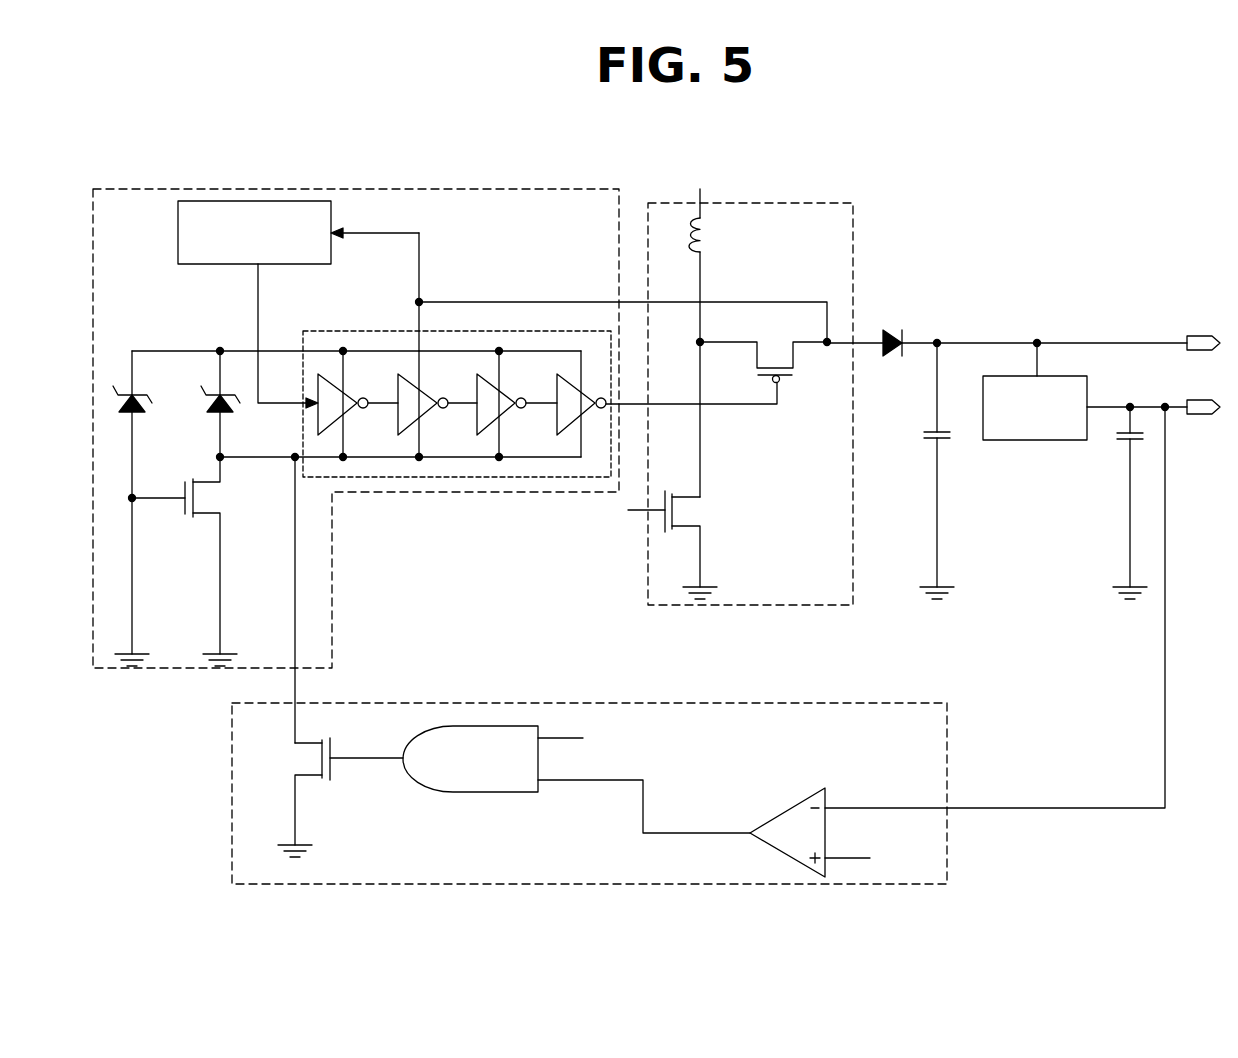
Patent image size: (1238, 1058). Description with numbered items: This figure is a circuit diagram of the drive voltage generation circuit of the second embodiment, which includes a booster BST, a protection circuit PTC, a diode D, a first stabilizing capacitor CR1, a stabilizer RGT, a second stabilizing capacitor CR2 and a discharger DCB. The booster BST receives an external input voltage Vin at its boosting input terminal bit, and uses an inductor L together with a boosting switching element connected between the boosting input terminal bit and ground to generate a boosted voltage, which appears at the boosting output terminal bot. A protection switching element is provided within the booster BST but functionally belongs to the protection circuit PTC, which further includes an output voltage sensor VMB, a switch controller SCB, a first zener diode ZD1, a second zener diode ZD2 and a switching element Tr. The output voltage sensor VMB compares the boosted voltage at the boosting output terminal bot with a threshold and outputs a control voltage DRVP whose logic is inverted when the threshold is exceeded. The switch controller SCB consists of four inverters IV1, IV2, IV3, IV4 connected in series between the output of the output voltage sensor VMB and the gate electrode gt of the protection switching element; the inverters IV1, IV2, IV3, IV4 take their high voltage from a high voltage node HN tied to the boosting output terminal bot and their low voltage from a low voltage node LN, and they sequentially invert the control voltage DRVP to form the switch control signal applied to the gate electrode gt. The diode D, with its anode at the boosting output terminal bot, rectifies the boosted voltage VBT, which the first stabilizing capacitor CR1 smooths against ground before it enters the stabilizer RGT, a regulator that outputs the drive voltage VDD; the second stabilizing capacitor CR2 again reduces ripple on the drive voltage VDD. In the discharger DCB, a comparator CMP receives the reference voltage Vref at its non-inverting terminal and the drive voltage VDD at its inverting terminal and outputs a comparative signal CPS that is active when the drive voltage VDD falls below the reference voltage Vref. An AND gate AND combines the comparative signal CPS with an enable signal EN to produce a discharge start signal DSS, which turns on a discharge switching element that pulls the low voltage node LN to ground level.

The protection circuit PTC is at (333, 608).
The switch controller SCB is at (520, 478).
The booster BST is at (853, 233).
The discharger DCB is at (585, 703).
The output voltage sensor VMB is at (178, 234).
The high voltage node HN is at (418, 350).
The control voltage DRVP is at (258, 336).
The low voltage node LN is at (419, 459).
The first zener diode ZD1 is at (230, 404).
The second zener diode ZD2 is at (143, 508).
The switching element Tr is at (183, 561).
The first inverter IV1 is at (343, 404).
The second inverter IV2 is at (423, 404).
The third inverter IV3 is at (501, 404).
The fourth inverter IV4 is at (581, 404).
The gate electrode gt is at (733, 406).
The input voltage Vin is at (698, 192).
The inductor L is at (703, 235).
The boosting input terminal bit is at (697, 346).
The boosting output terminal bot is at (825, 346).
The diode D is at (882, 356).
The boosted voltage VBT is at (1077, 333).
The first stabilizing capacitor CR1 is at (918, 471).
The stabilizer RGT is at (1033, 441).
The drive voltage VDD is at (1022, 594).
The second stabilizing capacitor CR2 is at (1115, 503).
The discharge start signal DSS is at (366, 775).
The AND gate AND is at (468, 783).
The enable signal EN is at (575, 739).
The comparative signal CPS is at (644, 806).
The comparator CMP is at (782, 815).
The reference voltage Vref is at (869, 858).